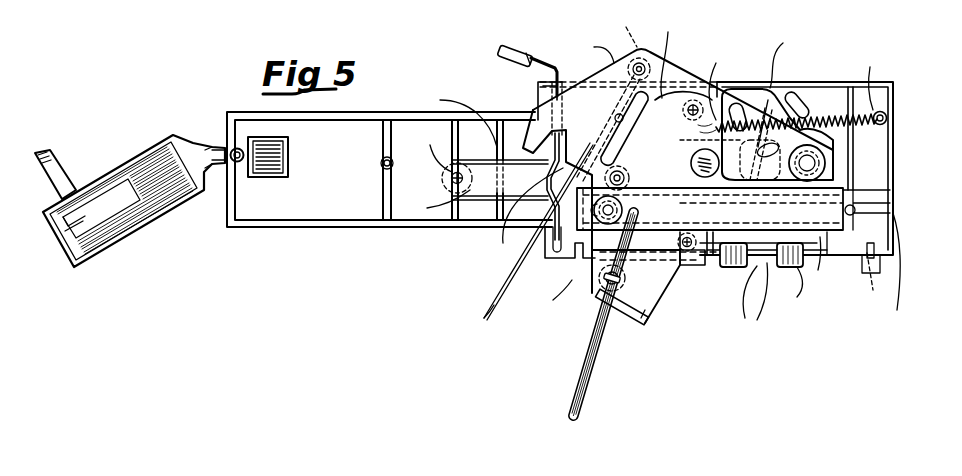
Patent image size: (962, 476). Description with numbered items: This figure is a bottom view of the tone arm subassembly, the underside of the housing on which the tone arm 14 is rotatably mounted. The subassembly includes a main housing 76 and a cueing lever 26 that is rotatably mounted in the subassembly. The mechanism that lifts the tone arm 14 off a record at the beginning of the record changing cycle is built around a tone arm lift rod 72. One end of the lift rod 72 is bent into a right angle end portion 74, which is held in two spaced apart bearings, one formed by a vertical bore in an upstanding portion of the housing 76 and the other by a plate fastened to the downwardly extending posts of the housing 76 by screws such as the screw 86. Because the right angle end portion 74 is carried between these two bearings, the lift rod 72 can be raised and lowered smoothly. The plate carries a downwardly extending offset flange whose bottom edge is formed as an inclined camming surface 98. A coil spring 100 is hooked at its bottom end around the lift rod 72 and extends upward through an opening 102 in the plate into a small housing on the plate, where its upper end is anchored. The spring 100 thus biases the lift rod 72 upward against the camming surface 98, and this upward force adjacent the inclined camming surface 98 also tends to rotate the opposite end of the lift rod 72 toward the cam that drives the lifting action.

The tone arm 14 is at (220, 146).
The cueing lever 26 is at (496, 53).
The tone arm lift rod 72 is at (590, 386).
The right angle end portion 74 is at (632, 200).
The main housing 76 is at (808, 82).
The screw 86 is at (685, 252).
The inclined camming surface 98 is at (621, 305).
The coil spring 100 is at (626, 277).
The opening 102 is at (623, 283).